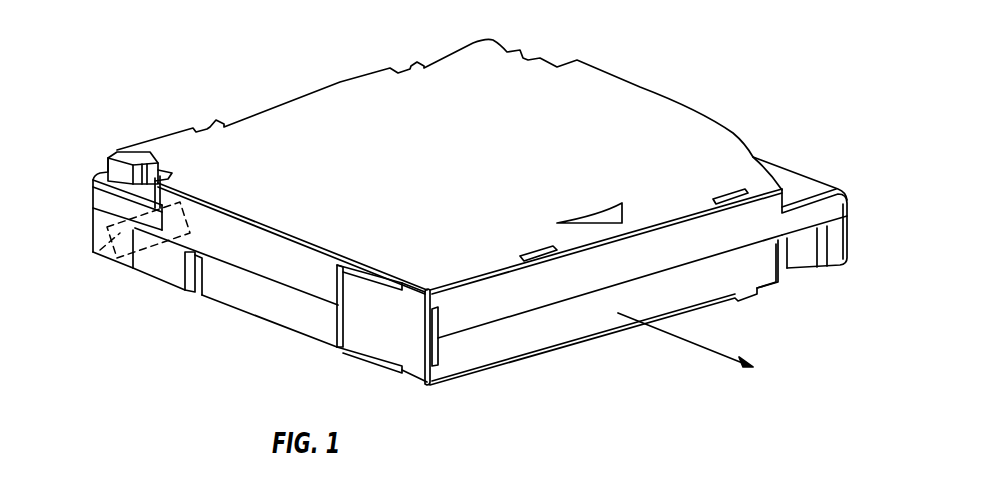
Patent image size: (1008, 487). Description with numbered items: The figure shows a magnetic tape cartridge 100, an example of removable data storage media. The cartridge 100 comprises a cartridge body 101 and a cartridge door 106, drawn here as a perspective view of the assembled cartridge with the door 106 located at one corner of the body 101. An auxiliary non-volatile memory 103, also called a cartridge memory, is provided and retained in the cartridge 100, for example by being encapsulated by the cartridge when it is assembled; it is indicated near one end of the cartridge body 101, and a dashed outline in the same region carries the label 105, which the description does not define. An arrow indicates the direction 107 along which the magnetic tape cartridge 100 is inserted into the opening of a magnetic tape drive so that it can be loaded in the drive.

The magnetic tape cartridge 100 is at (763, 83).
The cartridge body 101 is at (362, 77).
The auxiliary non-volatile memory 103 is at (140, 162).
The cartridge memory location 105 is at (108, 242).
The cartridge door 106 is at (387, 323).
The direction 107 is at (707, 340).